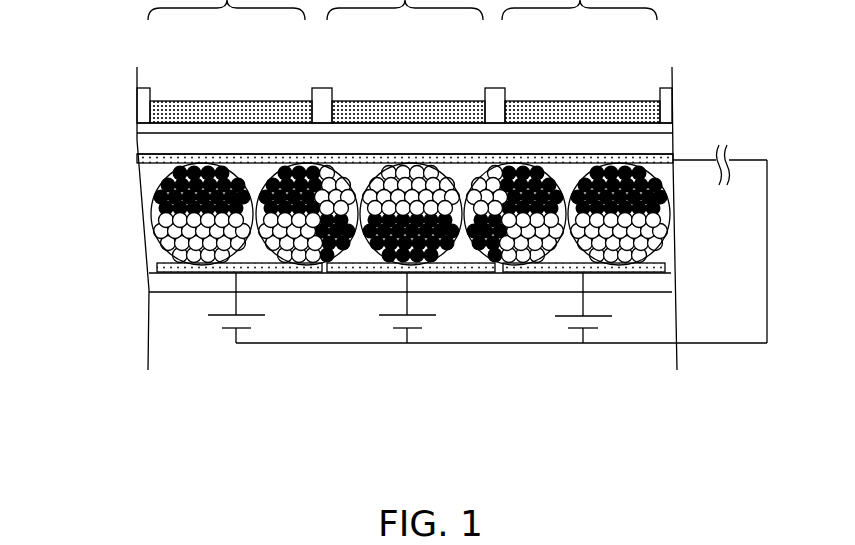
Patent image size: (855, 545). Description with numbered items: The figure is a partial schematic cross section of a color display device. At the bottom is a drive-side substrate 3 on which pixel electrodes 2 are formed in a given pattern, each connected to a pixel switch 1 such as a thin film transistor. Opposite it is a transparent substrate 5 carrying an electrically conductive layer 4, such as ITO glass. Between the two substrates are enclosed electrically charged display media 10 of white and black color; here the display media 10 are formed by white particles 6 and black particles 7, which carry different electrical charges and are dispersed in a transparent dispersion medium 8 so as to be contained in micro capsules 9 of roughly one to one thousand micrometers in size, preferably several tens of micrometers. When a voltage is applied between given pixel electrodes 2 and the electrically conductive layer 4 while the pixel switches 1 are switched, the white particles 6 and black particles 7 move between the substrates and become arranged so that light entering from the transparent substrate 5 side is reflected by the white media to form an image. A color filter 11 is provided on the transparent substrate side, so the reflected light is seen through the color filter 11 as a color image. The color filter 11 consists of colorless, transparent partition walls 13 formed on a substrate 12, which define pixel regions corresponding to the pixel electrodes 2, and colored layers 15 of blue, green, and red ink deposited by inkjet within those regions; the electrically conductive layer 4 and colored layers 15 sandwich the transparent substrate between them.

The pixel switch 1 is at (597, 329).
The pixel electrode 2 is at (190, 266).
The drive-side substrate 3 is at (168, 283).
The electrically conductive layer 4 is at (145, 159).
The transparent substrate 5 is at (145, 141).
The white particles 6 is at (165, 243).
The black particles 7 is at (152, 193).
The transparent dispersion medium 8 is at (160, 216).
The micro capsule 9 is at (668, 240).
The display media 10 is at (343, 226).
The color filter 11 is at (470, 82).
The substrate 12 is at (665, 130).
The partition wall 13 is at (322, 90).
The colored layer 15 is at (207, 105).